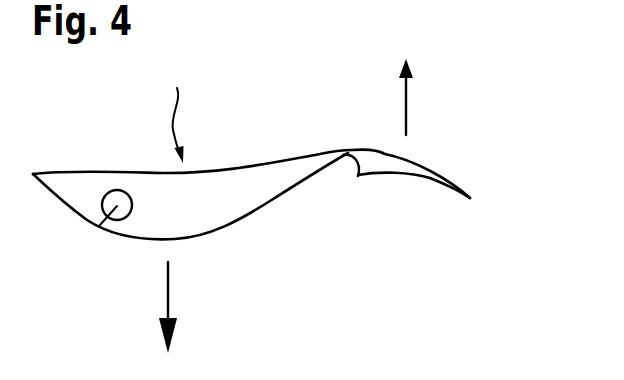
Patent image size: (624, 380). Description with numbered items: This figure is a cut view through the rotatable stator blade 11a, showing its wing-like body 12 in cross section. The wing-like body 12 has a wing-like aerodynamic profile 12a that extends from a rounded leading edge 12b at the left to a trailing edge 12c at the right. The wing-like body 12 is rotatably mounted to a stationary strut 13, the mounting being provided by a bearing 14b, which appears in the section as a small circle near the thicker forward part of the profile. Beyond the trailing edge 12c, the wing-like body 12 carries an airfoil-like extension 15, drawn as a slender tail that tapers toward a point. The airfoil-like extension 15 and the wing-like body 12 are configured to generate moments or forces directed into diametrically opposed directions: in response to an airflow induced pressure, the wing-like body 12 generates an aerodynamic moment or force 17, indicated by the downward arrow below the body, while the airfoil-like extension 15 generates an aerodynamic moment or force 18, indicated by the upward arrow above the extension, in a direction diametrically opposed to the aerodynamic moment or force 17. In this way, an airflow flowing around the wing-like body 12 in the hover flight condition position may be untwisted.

The rotatable stator blade 11a is at (181, 108).
The wing-like body 12 is at (260, 190).
The wing-like aerodynamic profile 12a is at (303, 158).
The leading edge 12b is at (33, 174).
The trailing edge 12c is at (360, 175).
The stationary strut 13 is at (100, 225).
The bearing 14b is at (131, 214).
The airfoil-like extension 15 is at (407, 168).
The aerodynamic moment or force 17 is at (168, 295).
The aerodynamic moment or force 18 is at (406, 108).